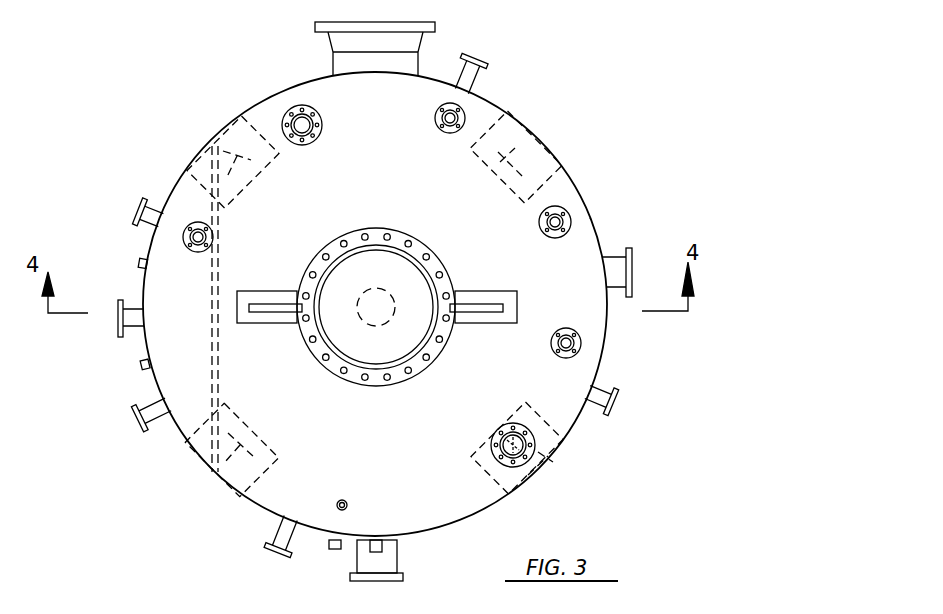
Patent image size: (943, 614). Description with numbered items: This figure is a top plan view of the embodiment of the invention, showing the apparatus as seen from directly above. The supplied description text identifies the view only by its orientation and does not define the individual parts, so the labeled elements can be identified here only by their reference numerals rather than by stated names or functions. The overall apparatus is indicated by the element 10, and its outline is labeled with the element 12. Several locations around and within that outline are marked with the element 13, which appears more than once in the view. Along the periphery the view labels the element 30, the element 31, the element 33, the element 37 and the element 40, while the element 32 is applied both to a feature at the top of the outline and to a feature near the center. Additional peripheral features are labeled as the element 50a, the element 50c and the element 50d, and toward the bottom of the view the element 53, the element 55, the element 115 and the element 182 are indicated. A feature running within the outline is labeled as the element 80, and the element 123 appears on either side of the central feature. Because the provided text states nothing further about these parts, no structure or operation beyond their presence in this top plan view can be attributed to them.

The sterilization vessel 10 is at (596, 153).
The vessel wall 12 is at (591, 218).
The mounting locations 13 is at (226, 152).
The side port 30 is at (633, 262).
The fitting 31 is at (139, 262).
The flanged port 32 is at (428, 24).
The nozzle 33 is at (136, 424).
The fitting 37 is at (141, 366).
The side port 40 is at (118, 318).
The nozzle 50a is at (618, 403).
The nozzle 50c is at (136, 205).
The nozzle 50d is at (486, 64).
The nozzle 53 is at (276, 560).
The bottom port 55 is at (398, 578).
The pipe 80 is at (218, 382).
The fitting 115 is at (335, 552).
The bracket 123 is at (258, 300).
The fitting 182 is at (383, 545).